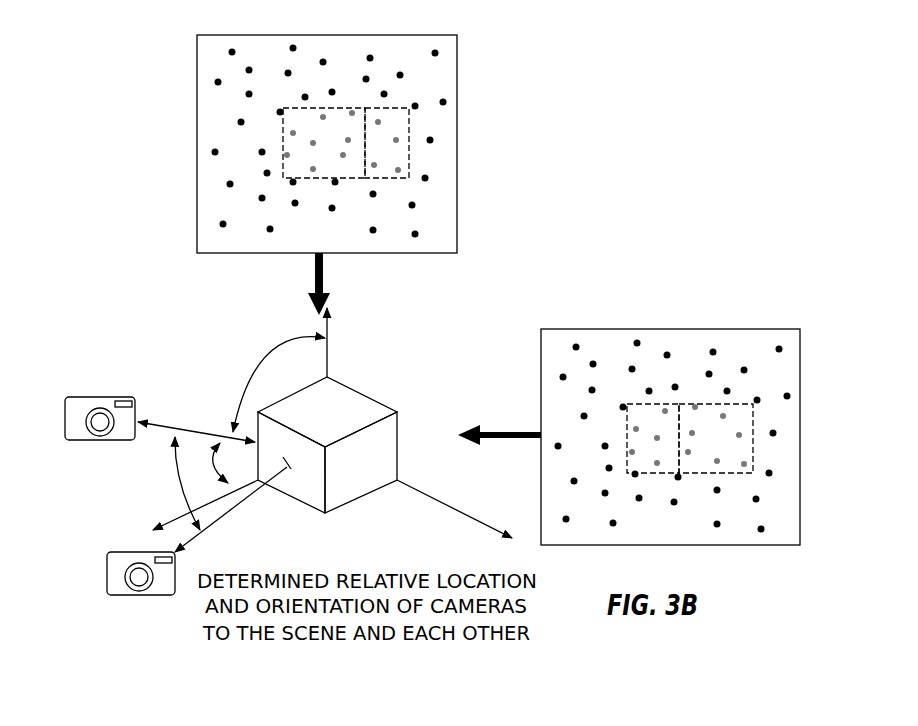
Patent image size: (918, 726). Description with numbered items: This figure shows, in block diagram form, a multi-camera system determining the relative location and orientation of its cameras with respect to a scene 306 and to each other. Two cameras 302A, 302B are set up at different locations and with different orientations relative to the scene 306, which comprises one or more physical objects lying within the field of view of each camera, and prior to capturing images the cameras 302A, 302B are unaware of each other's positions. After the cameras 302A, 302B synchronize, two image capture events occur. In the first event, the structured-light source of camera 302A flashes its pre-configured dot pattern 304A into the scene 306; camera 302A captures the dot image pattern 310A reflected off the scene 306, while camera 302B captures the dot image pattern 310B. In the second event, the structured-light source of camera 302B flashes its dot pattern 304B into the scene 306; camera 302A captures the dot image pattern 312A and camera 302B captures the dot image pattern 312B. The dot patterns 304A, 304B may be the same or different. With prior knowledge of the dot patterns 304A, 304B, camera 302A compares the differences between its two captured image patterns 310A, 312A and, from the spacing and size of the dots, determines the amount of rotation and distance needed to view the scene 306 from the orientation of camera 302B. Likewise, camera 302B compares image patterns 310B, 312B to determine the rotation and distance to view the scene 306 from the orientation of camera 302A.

The camera 302A is at (115, 397).
The camera 302B is at (125, 552).
The dot pattern 304A is at (197, 107).
The dot pattern 304B is at (800, 433).
The scene 306 is at (346, 383).
The dot image pattern 310A is at (310, 108).
The dot image pattern 310B is at (640, 403).
The dot image pattern 312A is at (388, 107).
The dot image pattern 312B is at (720, 403).